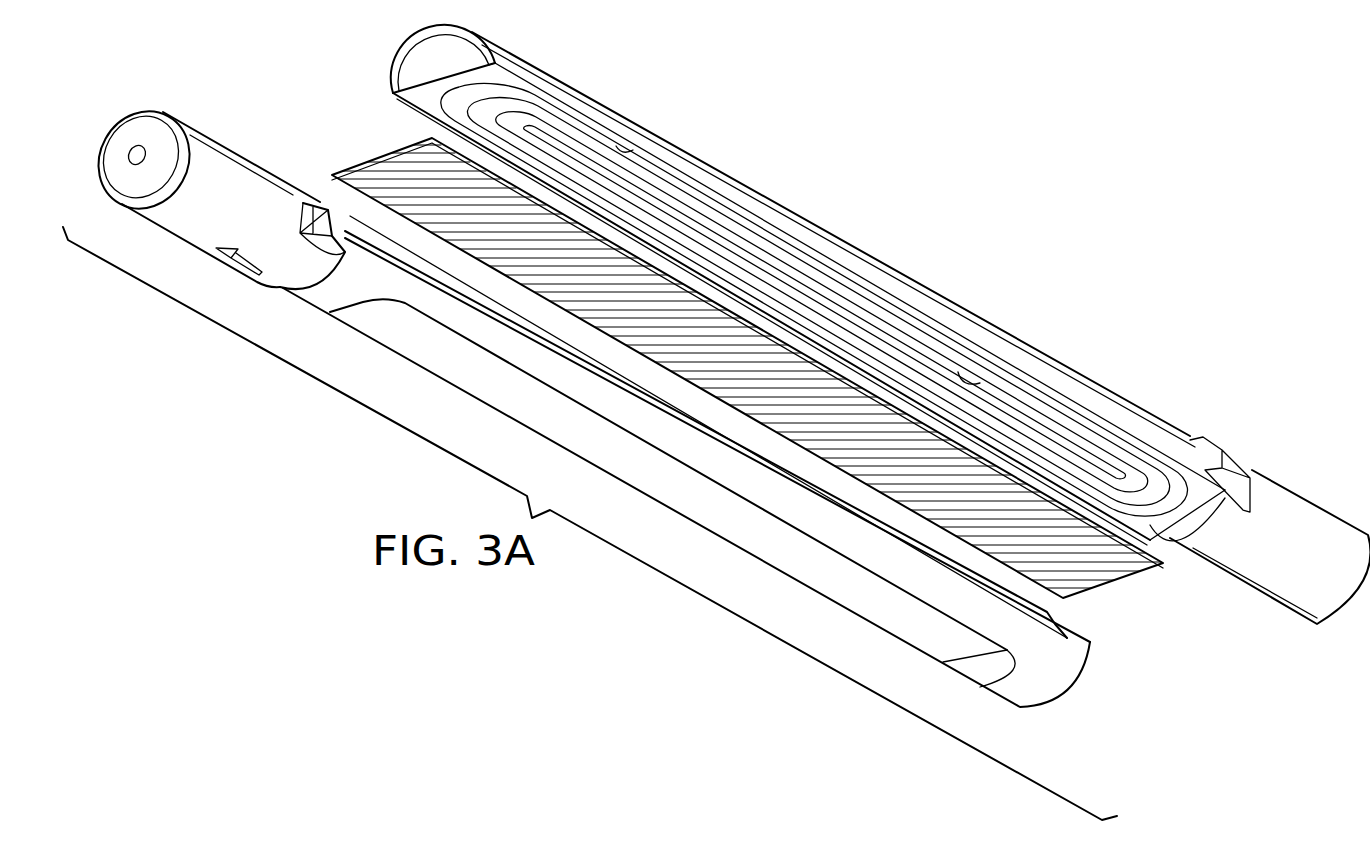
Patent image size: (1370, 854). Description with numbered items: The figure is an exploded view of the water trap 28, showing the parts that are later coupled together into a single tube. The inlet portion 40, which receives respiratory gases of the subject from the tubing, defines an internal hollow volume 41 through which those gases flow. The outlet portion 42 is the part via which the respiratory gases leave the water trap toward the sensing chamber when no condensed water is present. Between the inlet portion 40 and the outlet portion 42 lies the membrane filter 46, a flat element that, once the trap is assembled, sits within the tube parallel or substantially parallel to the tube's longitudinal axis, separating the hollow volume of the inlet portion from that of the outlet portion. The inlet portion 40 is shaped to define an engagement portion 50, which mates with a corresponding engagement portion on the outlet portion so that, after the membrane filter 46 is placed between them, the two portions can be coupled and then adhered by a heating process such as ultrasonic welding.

The water trap 28 is at (984, 264).
The inlet portion 40 is at (775, 217).
The internal hollow volume 41 is at (972, 388).
The outlet portion 42 is at (428, 350).
The membrane filter 46 is at (350, 164).
The engagement portion 50 is at (636, 160).